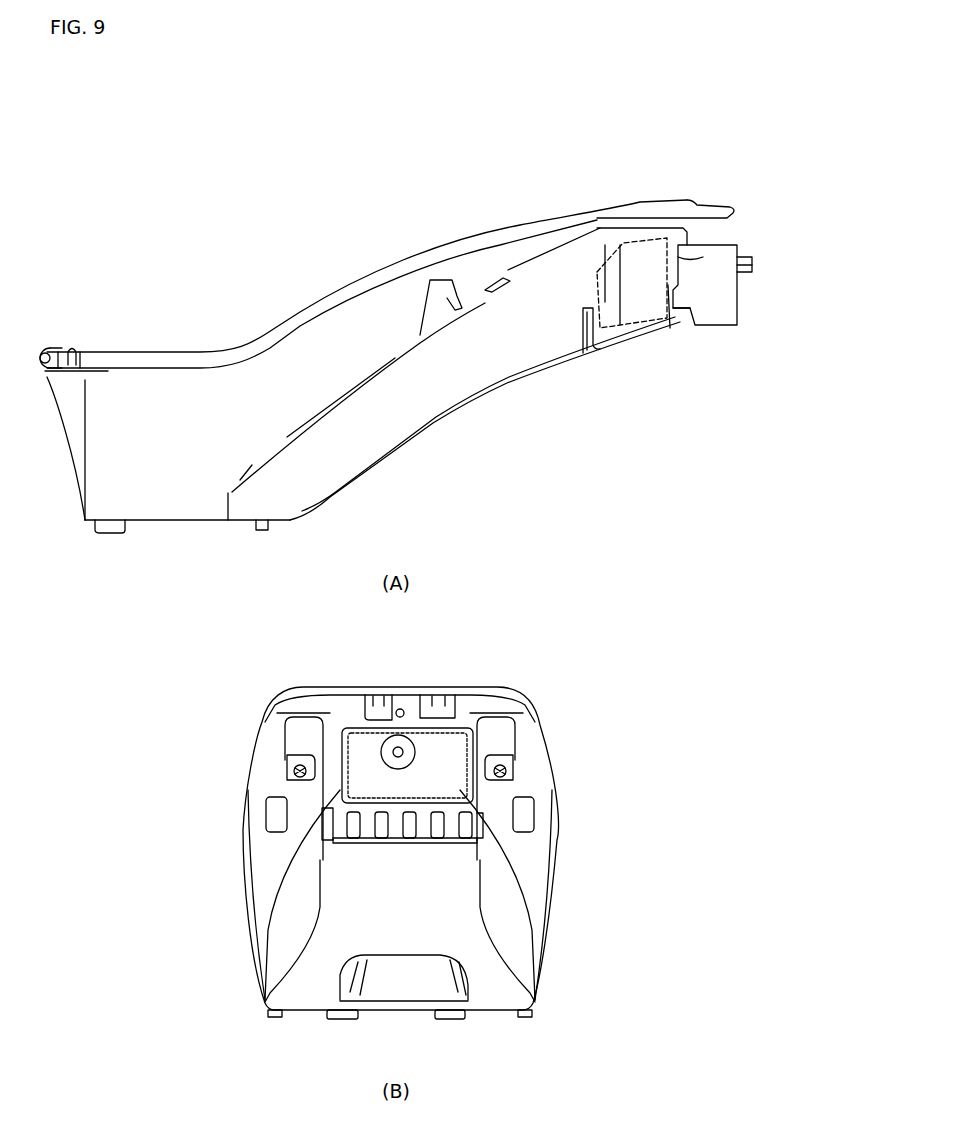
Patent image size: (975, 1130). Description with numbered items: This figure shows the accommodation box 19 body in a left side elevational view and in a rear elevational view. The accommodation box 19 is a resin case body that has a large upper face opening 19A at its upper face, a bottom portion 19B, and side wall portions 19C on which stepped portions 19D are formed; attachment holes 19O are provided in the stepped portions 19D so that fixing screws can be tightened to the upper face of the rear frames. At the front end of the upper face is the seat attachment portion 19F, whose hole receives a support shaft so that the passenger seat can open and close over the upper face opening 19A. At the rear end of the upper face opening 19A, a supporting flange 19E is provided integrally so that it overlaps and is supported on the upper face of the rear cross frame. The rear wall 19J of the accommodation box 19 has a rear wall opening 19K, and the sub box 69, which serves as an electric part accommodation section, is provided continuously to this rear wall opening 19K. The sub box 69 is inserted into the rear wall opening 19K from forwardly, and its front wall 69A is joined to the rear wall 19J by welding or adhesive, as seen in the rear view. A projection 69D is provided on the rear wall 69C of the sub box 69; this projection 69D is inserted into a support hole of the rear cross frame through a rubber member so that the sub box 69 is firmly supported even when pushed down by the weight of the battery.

The accommodation box 19 is at (400, 233).
The upper face opening 19A is at (247, 337).
The bottom portion 19B is at (186, 525).
The side wall portions 19C is at (374, 440).
The stepped portions 19D is at (400, 367).
The supporting flange 19E is at (705, 220).
The seat attachment portion 19F is at (45, 350).
The rear wall 19J is at (690, 260).
The rear wall opening 19K is at (370, 733).
The attachment holes 19O is at (498, 294).
The sub box 69 is at (738, 327).
The front wall 69A is at (677, 286).
The rear wall 69C is at (737, 293).
The projection 69D is at (744, 268).